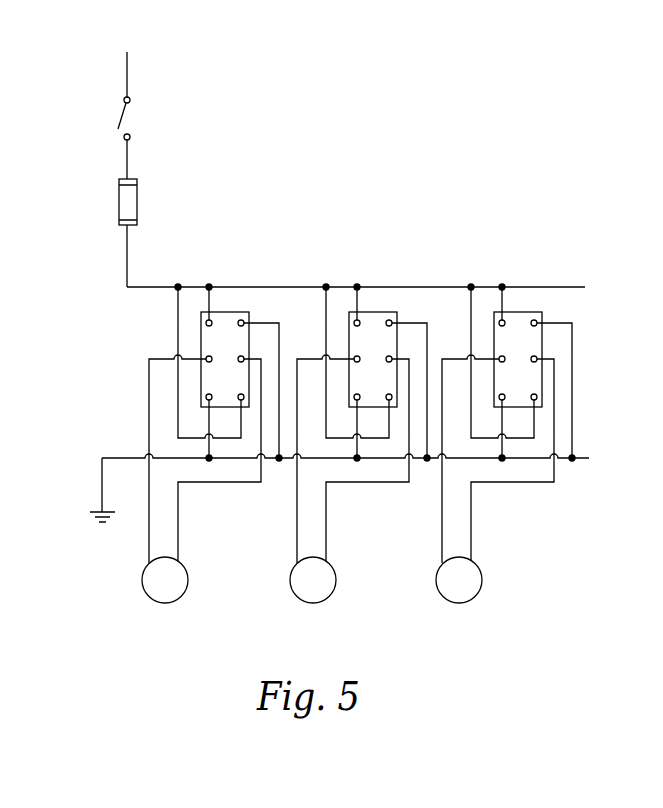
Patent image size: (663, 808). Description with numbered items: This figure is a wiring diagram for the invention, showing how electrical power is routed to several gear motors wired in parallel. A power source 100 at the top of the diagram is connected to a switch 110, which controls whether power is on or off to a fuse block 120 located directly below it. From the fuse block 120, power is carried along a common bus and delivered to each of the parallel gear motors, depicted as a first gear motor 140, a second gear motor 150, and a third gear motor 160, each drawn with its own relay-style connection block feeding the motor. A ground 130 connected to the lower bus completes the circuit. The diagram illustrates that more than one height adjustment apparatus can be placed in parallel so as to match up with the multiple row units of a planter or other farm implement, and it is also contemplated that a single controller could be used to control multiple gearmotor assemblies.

The power source 100 is at (125, 68).
The switch 110 is at (118, 125).
The fuse block 120 is at (120, 207).
The ground 130 is at (93, 517).
The first gear motor 140 is at (165, 603).
The second gear motor 150 is at (313, 603).
The third gear motor 160 is at (459, 603).